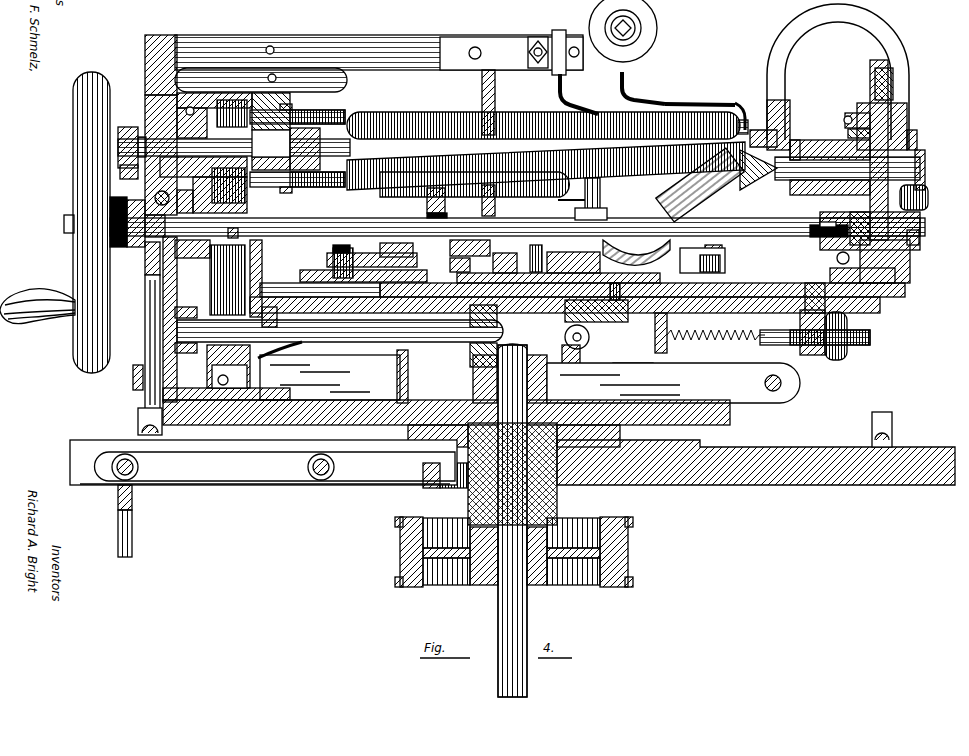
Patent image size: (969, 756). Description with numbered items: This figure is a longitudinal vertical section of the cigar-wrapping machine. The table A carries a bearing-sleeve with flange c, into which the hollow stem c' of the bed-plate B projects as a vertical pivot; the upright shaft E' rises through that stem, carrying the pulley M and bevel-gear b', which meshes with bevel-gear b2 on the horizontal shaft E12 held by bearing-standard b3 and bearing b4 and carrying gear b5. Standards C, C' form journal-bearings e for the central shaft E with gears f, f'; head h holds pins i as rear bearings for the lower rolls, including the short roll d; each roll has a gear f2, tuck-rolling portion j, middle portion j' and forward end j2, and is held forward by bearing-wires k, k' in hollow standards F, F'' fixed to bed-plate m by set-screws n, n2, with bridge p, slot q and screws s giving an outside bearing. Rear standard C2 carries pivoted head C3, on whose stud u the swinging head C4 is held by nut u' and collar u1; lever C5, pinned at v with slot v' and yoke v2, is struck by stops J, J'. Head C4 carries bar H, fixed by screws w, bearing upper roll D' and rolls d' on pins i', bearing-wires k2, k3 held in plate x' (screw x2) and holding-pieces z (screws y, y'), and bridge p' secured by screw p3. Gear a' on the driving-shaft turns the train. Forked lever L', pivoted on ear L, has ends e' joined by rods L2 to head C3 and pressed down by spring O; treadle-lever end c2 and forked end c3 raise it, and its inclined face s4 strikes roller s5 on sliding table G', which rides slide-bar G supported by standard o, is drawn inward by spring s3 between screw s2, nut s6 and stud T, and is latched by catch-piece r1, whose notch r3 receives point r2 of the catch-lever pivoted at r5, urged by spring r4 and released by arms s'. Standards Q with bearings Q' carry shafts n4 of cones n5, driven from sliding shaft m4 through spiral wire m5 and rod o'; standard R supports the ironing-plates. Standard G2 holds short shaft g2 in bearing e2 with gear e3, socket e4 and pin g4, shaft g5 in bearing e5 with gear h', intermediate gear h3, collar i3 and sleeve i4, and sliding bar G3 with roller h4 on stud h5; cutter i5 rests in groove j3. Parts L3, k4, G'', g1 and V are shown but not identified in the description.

The forked lever L' is at (383, 236).
The laterally-swinging head C4 is at (145, 86).
The pivoted head C3 is at (145, 112).
The standard C2 is at (145, 262).
The upright standard C' is at (151, 319).
The lever C5 is at (150, 322).
The yoke v2 is at (135, 366).
The stop J is at (140, 421).
The upright standard C is at (225, 246).
The gear f' is at (192, 119).
The bearing window L3 is at (232, 113).
The connecting-rods L2 is at (227, 241).
The flange c is at (436, 270).
The journal-bearings e is at (234, 147).
The nut u' is at (125, 142).
The pivot-stud u is at (143, 147).
The collar u1 is at (145, 176).
The pivot-pin v is at (149, 196).
The slot v' is at (144, 231).
The gear a' is at (185, 200).
The central shaft E is at (266, 143).
The head h is at (266, 148).
The gear f is at (307, 149).
The fixed pins i' is at (297, 107).
The roll gear f2 is at (298, 105).
The fixed pins i is at (297, 190).
The stud T is at (800, 350).
The sleeve i4 is at (233, 232).
The bar H is at (398, 36).
The screws w is at (261, 68).
The screw p3 is at (476, 47).
The holding-pieces z is at (538, 44).
The screw y is at (549, 59).
The set-screws y' is at (581, 54).
The screw x2 is at (623, 31).
The circular plate x' is at (633, 88).
The bearing-wires k3 is at (588, 110).
The bearing-wire k2 is at (692, 108).
The forward end of roll j2 is at (740, 118).
The adjustable bridge p' is at (477, 102).
The supporting bridge p is at (687, 110).
The slot q is at (474, 257).
The standard R is at (427, 200).
The upper roll D' is at (543, 114).
The upper intermediate rolls d' is at (546, 149).
The intermediate roll d is at (474, 189).
The tuck-rolling portion j is at (504, 124).
The middle rolling portion j' is at (617, 109).
The bearing-wire k is at (567, 200).
The bearing-wire k' is at (597, 195).
The hollow standard F is at (551, 211).
The hollow standard F'' is at (614, 212).
The adjustable bearings Q' is at (708, 185).
The revolving cones n5 is at (758, 170).
The cone shafts n4 is at (740, 186).
The groove j3 is at (766, 198).
The wedge k4 is at (760, 140).
The circular cutter i5 is at (795, 122).
The sliding bar G3 is at (870, 102).
The upright standard G2 is at (907, 112).
The friction-roller h4 is at (853, 116).
The screw-stud h5 is at (848, 131).
The bearing block G'' is at (830, 165).
The adjustable collar i3 is at (830, 153).
The bearing e5 is at (907, 148).
The shaft g5 is at (847, 168).
The gear h' is at (925, 170).
The intermediate gear h3 is at (920, 193).
The bearing g1 is at (870, 231).
The short shaft g2 is at (812, 222).
The transverse pin g4 is at (828, 214).
The bearing e2 is at (858, 222).
The gear e3 is at (918, 245).
The socket-opening e4 is at (830, 264).
The sliding table G' is at (642, 282).
The slide-bar G is at (574, 301).
The catch-piece r1 is at (420, 283).
The arms s' is at (421, 278).
The point r2 is at (372, 255).
The notch r3 is at (422, 238).
The spring r4 is at (396, 283).
The pivot-screw r5 is at (362, 233).
The flexible spiral wire m5 is at (526, 253).
The rod o' is at (470, 240).
The screws s is at (458, 368).
The set-screw n is at (517, 264).
The set-screw n2 is at (580, 264).
The fixed bed-plate m is at (650, 271).
The sliding shaft m4 is at (704, 247).
The standards Q is at (702, 260).
The horizontal shaft E12 is at (340, 331).
The gear b5 is at (193, 318).
The bearing b4 is at (238, 318).
The lever ends e' is at (229, 376).
The wire spring O is at (300, 350).
The bearing-standard b3 is at (397, 358).
The bevel-gear b2 is at (490, 336).
The bevel-gear b' is at (511, 371).
The inclined face s4 is at (565, 337).
The roller s5 is at (590, 337).
The block V is at (607, 373).
The ear L is at (676, 383).
The standard o is at (672, 333).
The spiral spring s3 is at (768, 342).
The screw s2 is at (860, 342).
The nut s6 is at (845, 358).
The bed-plate B is at (315, 400).
The upright shaft E' is at (512, 520).
The table A is at (832, 447).
The stop J' is at (500, 446).
The lever end c2 is at (112, 467).
The forked lever end c3 is at (462, 467).
The hollow stem c' is at (512, 474).
The pulley M is at (625, 548).